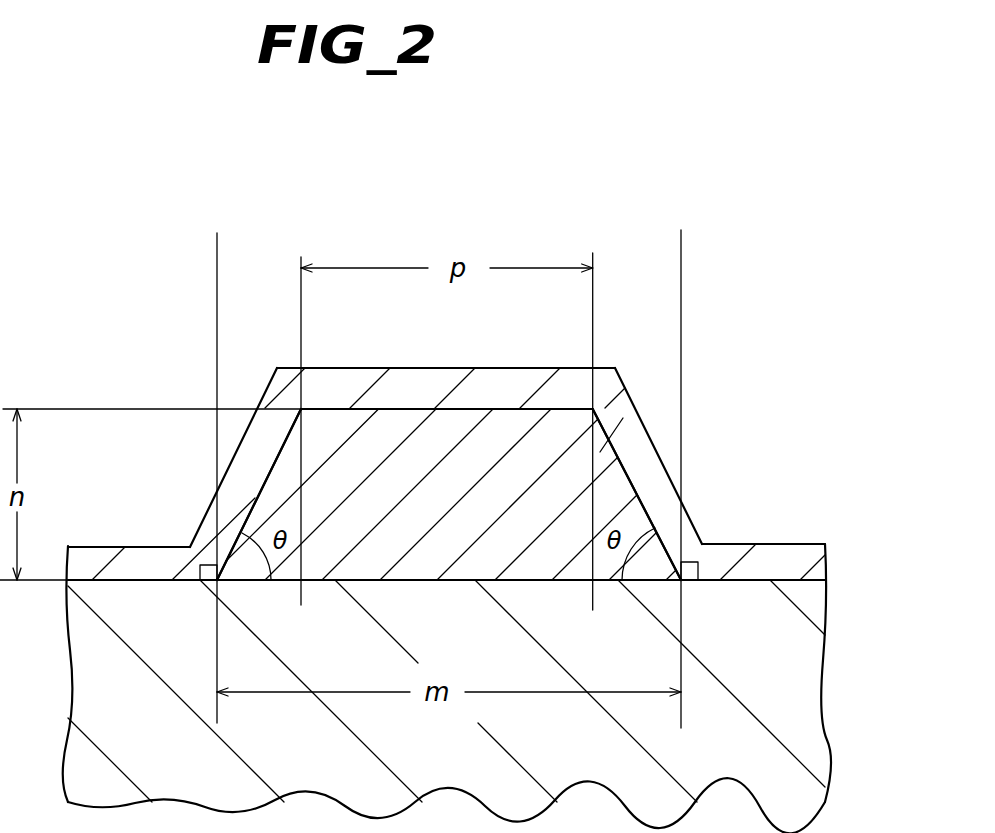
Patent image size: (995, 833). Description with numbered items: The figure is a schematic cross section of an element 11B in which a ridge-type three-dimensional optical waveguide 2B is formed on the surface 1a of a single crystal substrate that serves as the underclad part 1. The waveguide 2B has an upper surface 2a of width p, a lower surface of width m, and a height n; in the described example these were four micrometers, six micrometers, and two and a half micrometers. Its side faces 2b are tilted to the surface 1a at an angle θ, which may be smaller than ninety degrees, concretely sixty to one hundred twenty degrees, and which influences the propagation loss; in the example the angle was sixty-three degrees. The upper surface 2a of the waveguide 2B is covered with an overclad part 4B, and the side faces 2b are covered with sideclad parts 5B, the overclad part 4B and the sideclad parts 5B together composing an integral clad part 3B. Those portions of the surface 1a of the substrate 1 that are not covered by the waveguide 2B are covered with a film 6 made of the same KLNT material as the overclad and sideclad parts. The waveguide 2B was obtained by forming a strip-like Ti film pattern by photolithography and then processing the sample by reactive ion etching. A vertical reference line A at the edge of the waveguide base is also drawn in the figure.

The underclad part 1 is at (783, 655).
The surface of the underclad part 1a is at (797, 562).
The three-dimensional optical waveguide 2B is at (584, 425).
The upper surface 2a is at (505, 406).
The side face 2b is at (645, 507).
The integral clad part 3B is at (632, 359).
The overclad part 4B is at (362, 392).
The sideclad part 5B is at (652, 477).
The film 6 is at (130, 565).
The element 11B is at (749, 317).
The reference line at base edge A is at (681, 270).